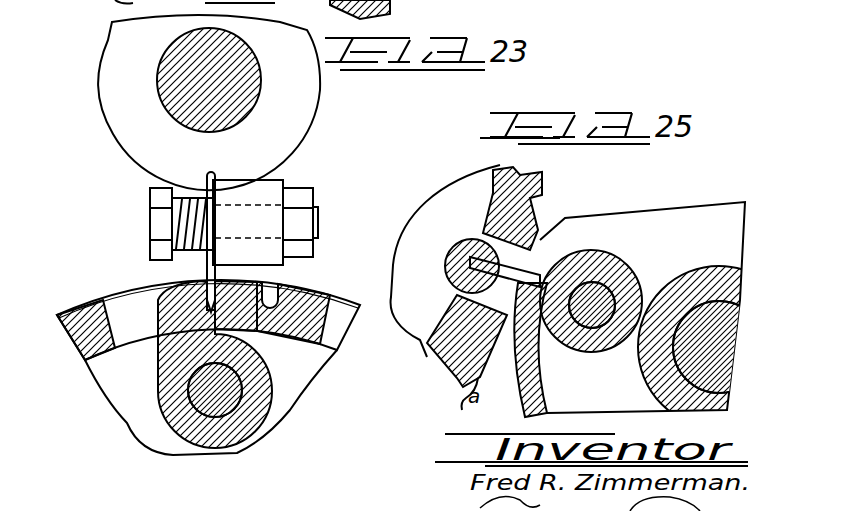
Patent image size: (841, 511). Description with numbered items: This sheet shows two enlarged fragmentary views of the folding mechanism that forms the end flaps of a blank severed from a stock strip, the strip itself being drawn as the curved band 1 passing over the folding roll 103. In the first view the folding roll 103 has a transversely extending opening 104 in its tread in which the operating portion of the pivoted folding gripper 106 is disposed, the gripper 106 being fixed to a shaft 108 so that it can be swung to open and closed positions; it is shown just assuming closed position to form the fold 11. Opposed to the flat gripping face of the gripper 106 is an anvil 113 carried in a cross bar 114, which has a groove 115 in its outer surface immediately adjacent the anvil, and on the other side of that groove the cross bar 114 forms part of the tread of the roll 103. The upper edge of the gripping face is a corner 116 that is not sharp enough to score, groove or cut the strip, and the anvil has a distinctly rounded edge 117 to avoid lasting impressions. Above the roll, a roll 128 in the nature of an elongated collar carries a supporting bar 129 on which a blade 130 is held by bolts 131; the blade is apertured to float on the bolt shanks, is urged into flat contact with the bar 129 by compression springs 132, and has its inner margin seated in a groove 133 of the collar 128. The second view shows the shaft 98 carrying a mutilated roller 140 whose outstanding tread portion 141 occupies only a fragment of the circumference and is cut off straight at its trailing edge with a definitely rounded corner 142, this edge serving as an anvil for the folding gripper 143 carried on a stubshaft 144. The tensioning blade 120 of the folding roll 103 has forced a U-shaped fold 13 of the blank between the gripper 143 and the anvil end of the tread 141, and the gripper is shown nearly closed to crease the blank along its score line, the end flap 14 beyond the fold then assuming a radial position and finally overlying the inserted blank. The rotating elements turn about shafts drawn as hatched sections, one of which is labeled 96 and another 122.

In FIG. 23, the ring band 1 is at (83, 305).
In FIG. 23, the fold 11 is at (160, 318).
In FIG. 25, the U-shaped fold 13 is at (592, 283).
In FIG. 25, the end flap 14 is at (542, 270).
In FIG. 23, the shaft 96 is at (183, 78).
In FIG. 25, the shaft 98 is at (718, 312).
In FIG. 23, the folding roll 103 is at (92, 333).
In FIG. 25, the folding roll 103 is at (450, 356).
In FIG. 23, the opening 104 is at (126, 336).
In FIG. 23, the folding gripper 106 is at (165, 380).
In FIG. 23, the shaft 108 is at (222, 400).
In FIG. 23, the anvil 113 is at (260, 283).
In FIG. 25, the anvil 113 is at (522, 196).
In FIG. 23, the cross bar 114 is at (310, 336).
In FIG. 25, the cross bar 114 is at (492, 188).
In FIG. 23, the groove 115 is at (272, 297).
In FIG. 23, the corner 116 is at (180, 293).
In FIG. 23, the rounded edge 117 is at (233, 284).
In FIG. 25, the tensioning blade 120 is at (458, 296).
In FIG. 25, the pivot pin 122 is at (460, 268).
In FIG. 23, the roll 128 is at (125, 115).
In FIG. 23, the supporting bar 129 is at (262, 185).
In FIG. 23, the blade 130 is at (214, 228).
In FIG. 23, the bolts 131 is at (318, 223).
In FIG. 23, the compression springs 132 is at (178, 198).
In FIG. 23, the groove 133 is at (203, 185).
In FIG. 25, the mutilated roller 140 is at (683, 225).
In FIG. 25, the tread portion 141 is at (547, 405).
In FIG. 25, the rounded corner 142 is at (541, 328).
In FIG. 25, the folding gripper 143 is at (522, 281).
In FIG. 25, the stubshaft 144 is at (612, 283).